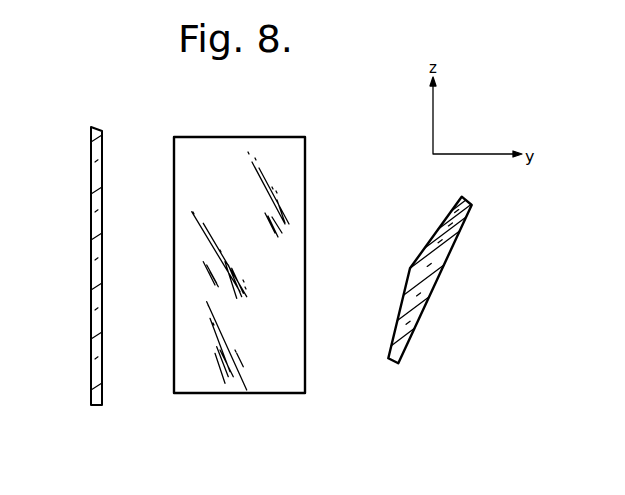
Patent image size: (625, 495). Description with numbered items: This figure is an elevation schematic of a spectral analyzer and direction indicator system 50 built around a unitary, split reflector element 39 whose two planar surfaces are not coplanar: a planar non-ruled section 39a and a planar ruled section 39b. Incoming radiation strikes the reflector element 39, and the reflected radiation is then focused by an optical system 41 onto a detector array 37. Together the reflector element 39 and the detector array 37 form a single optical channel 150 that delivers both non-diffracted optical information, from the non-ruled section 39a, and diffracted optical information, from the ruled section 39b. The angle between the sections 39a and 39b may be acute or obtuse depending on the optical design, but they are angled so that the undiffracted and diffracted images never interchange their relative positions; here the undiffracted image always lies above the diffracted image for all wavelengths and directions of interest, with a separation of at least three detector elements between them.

The detector array 37 is at (101, 127).
The optical system 41 is at (284, 137).
The split reflector element 39 is at (468, 300).
The planar non-ruled section 39a is at (443, 219).
The planar ruled section 39b is at (396, 320).
The spectral analyzer and direction indicator system 50 is at (371, 77).
The optical channel 150 is at (500, 432).